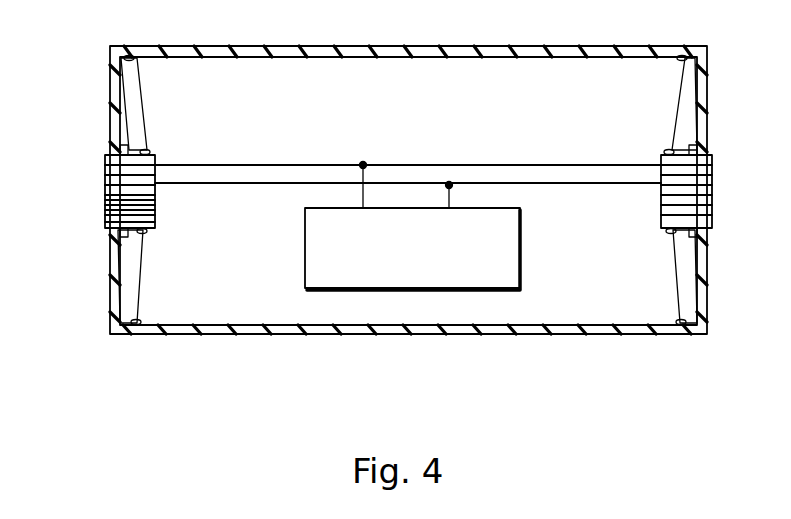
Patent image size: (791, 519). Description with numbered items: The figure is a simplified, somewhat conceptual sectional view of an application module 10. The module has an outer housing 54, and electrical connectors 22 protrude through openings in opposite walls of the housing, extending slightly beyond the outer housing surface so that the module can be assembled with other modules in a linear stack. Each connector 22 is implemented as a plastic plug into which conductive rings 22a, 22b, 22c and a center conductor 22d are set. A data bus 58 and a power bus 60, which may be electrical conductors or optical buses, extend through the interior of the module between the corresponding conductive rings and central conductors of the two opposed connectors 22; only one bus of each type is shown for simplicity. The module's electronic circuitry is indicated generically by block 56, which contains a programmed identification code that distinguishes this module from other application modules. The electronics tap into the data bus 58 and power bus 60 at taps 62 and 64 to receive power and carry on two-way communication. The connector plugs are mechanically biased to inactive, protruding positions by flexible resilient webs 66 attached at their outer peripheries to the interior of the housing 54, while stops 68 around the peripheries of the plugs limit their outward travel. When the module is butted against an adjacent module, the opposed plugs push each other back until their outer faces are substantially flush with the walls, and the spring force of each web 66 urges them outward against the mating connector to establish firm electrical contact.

The application module 10 is at (213, 355).
The electrical connectors 22 is at (105, 158).
The conductive ring 22a is at (105, 222).
The conductive ring 22b is at (105, 210).
The conductive ring 22c is at (105, 202).
The center conductor 22d is at (105, 190).
The outer housing 54 is at (110, 87).
The electronic circuitry block 56 is at (305, 290).
The data bus 58 is at (250, 165).
The power bus 60 is at (266, 185).
The tap 62 is at (345, 165).
The tap 64 is at (448, 197).
The flexible resilient web 66 is at (142, 108).
The stop 68 is at (126, 148).